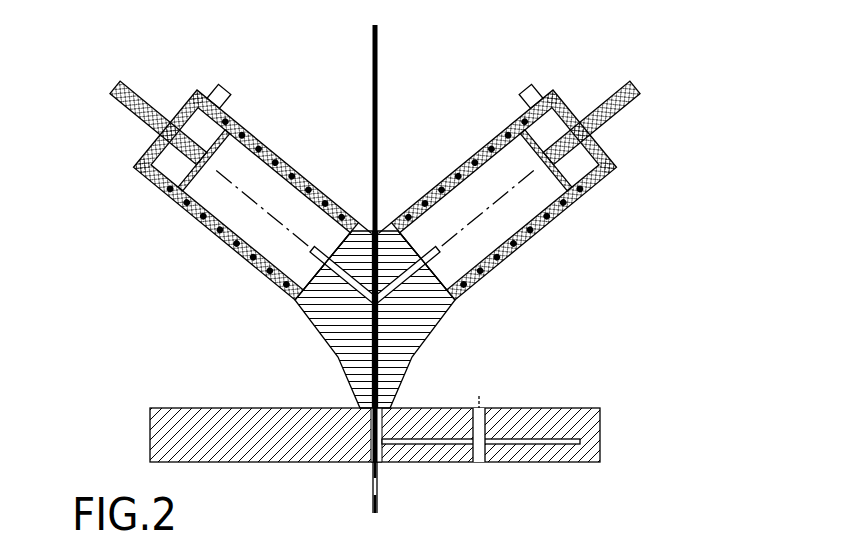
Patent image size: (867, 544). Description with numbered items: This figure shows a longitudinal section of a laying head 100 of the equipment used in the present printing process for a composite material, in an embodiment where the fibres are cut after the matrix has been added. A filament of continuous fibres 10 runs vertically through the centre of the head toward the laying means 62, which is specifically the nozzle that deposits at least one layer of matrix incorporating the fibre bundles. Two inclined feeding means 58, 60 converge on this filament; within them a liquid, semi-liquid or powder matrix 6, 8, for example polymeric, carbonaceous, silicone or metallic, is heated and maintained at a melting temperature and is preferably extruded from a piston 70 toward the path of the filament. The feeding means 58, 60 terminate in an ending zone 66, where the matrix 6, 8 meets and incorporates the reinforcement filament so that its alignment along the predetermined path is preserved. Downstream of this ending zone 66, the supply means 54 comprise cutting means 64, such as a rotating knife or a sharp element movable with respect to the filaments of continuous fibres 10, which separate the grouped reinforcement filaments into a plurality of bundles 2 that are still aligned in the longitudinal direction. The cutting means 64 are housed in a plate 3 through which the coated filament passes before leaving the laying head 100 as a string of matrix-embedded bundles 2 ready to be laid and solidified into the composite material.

The bundles of reinforcement fibres 2 is at (381, 467).
The substrate plate 3 is at (603, 442).
The matrix 6 is at (263, 233).
The matrix 8 is at (490, 233).
The filaments of continuous fibres 10 is at (377, 96).
The supply means 54 is at (348, 437).
The feeding means 58 is at (570, 247).
The feeding means 60 is at (157, 213).
The laying means 62 is at (365, 468).
The cutting means 64 is at (533, 450).
The ending zone of the feeding means 66 is at (400, 312).
The piston 70 is at (578, 172).
The laying head 100 is at (720, 148).